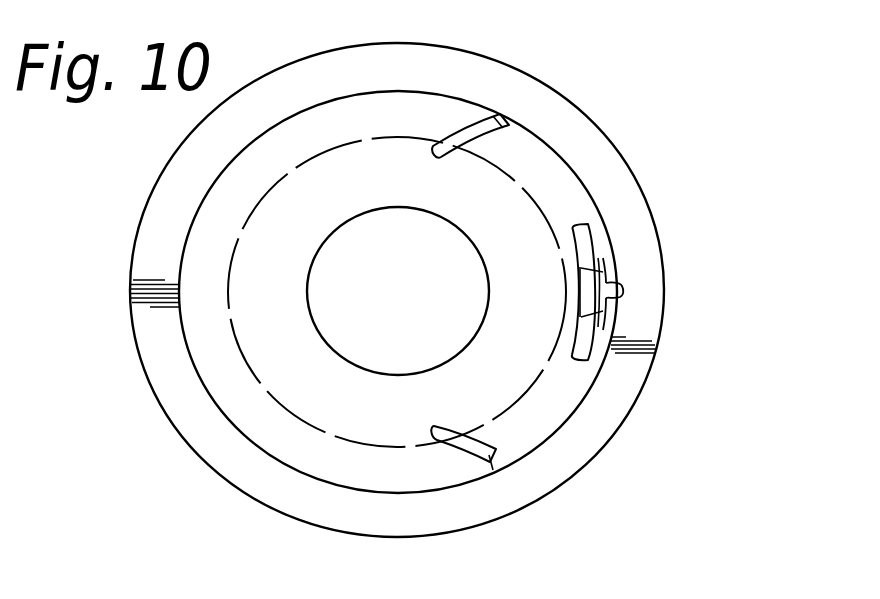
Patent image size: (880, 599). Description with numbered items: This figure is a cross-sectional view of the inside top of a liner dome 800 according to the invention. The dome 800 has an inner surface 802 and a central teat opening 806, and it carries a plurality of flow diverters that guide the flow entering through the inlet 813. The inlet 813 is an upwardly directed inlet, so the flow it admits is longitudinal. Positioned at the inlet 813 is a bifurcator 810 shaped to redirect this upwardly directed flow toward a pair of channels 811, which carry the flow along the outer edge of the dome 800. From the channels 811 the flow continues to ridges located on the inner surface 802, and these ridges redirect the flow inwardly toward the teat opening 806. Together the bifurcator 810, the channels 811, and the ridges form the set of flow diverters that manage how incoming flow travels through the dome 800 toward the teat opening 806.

The dome 800 is at (608, 96).
The inner surface 802 is at (362, 113).
The teat opening 806 is at (372, 307).
The bifurcator 810 is at (588, 288).
The channels 811 is at (583, 247).
The inlet 813 is at (625, 290).